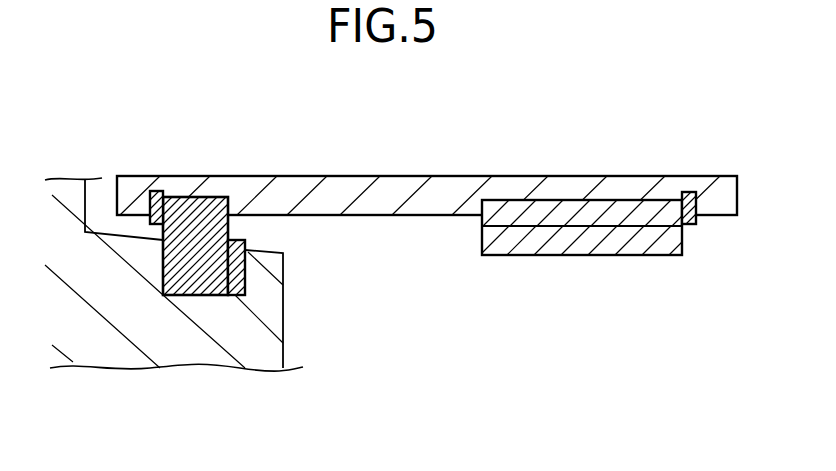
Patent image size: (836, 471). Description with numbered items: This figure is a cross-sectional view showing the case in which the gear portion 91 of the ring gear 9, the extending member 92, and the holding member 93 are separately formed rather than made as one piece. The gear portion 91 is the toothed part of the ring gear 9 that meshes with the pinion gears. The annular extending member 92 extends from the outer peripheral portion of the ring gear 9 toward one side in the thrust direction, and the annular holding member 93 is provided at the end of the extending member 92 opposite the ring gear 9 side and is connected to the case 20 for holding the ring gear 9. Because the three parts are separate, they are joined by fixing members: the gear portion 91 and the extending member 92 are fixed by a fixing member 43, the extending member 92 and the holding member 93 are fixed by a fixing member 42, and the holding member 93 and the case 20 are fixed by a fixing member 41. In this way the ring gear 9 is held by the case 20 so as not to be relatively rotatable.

The ring gear 9 is at (550, 162).
The case 20 is at (183, 358).
The fixing member 41 is at (245, 242).
The fixing member 42 is at (153, 192).
The fixing member 43 is at (685, 191).
The gear portion 91 is at (600, 257).
The extending member 92 is at (413, 205).
The holding member 93 is at (206, 215).